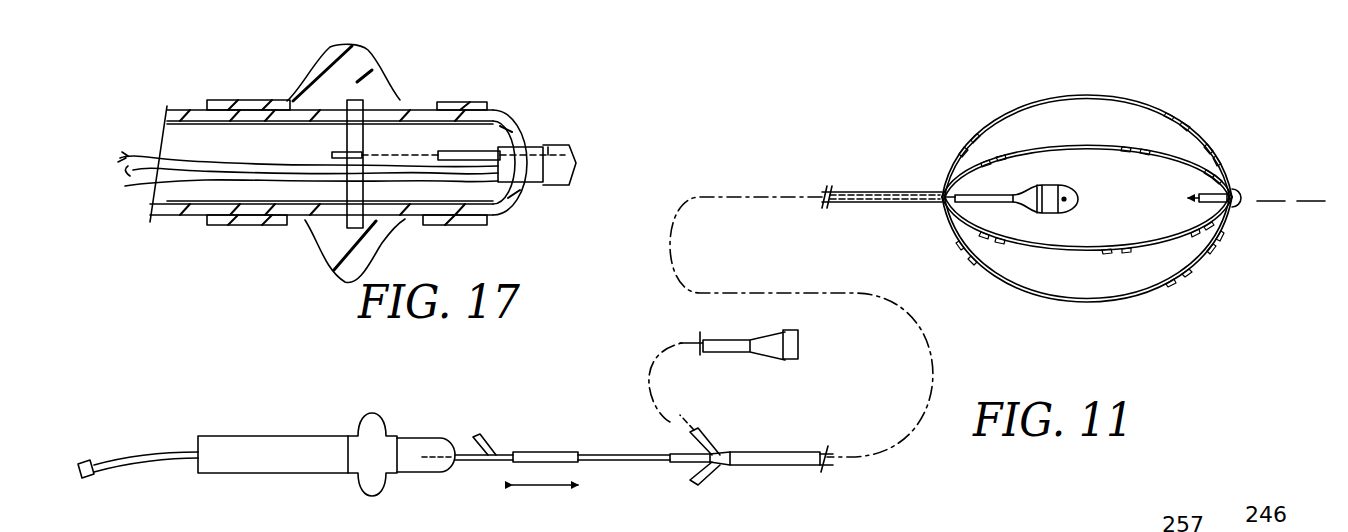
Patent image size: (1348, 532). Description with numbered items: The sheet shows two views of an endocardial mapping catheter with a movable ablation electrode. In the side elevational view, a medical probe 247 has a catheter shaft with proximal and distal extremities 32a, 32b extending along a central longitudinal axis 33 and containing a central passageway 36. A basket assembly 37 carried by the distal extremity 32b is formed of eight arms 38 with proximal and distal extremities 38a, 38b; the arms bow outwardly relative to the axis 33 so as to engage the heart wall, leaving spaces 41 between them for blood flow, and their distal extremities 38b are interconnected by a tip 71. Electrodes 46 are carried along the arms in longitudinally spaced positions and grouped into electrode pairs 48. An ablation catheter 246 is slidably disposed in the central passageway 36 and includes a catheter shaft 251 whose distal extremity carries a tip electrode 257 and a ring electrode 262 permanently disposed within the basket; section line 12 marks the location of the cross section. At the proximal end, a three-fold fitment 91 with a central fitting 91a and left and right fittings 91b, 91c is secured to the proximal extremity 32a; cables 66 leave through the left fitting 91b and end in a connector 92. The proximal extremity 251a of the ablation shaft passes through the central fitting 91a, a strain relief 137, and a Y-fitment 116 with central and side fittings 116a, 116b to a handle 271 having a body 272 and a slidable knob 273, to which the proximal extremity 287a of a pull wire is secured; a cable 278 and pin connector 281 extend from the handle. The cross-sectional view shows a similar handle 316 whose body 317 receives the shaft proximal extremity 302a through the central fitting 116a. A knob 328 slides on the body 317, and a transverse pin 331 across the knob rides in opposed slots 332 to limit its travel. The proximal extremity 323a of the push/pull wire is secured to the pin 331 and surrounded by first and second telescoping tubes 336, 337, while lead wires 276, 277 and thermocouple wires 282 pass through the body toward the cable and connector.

In FIG. 17, the handle 316 is at (482, 96).
In FIG. 17, the handle body 317 is at (192, 110).
In FIG. 17, the opposed slots 332 is at (290, 102).
In FIG. 17, the knob 328 is at (357, 66).
In FIG. 17, the pin 331 is at (346, 124).
In FIG. 17, the first telescoping tube 336 is at (402, 154).
In FIG. 17, the second telescoping tube 337 is at (478, 152).
In FIG. 17, the proximal extremity of catheter shaft 302a is at (538, 182).
In FIG. 17, the central fitting 116a is at (560, 146).
In FIG. 11, the central fitting 116a is at (483, 461).
In FIG. 17, the proximal extremity of push/pull wire 323a is at (540, 150).
In FIG. 17, the first wire 276 is at (134, 157).
In FIG. 17, the second wire 277 is at (135, 172).
In FIG. 17, the thermocouple wires 282 is at (131, 186).
In FIG. 11, the proximal extremity of catheter shaft 32a is at (792, 456).
In FIG. 11, the distal extremity of catheter shaft 32b is at (898, 192).
In FIG. 11, the central passageway 36 is at (862, 203).
In FIG. 11, the medical probe 247 is at (1200, 96).
In FIG. 11, the arms 38 is at (1088, 98).
In FIG. 11, the spaces 41 is at (1212, 150).
In FIG. 11, the basket assembly 37 is at (1196, 277).
In FIG. 11, the electrode pairs 48 is at (1132, 306).
In FIG. 11, the electrodes 46 is at (1130, 292).
In FIG. 11, the catheter shaft 251 is at (975, 193).
In FIG. 11, the proximal extremities of arms 38a is at (976, 202).
In FIG. 11, the tip electrode 257 is at (1080, 186).
In FIG. 11, the ring electrode 262 is at (1050, 212).
In FIG. 11, the ablation catheter 246 is at (1087, 210).
In FIG. 11, the distal extremities of arms 38b is at (1222, 202).
In FIG. 11, the tip 71 is at (1246, 207).
In FIG. 11, the central longitudinal axis 33 is at (1305, 201).
In FIG. 11, the section line 12 is at (992, 201).
In FIG. 11, the cables 66 is at (735, 340).
In FIG. 11, the connector 92 is at (780, 336).
In FIG. 11, the handle 271 is at (243, 425).
In FIG. 11, the pin connector 281 is at (88, 460).
In FIG. 11, the cable 278 is at (125, 463).
In FIG. 11, the handle body 272 is at (312, 473).
In FIG. 11, the knob 273 is at (370, 414).
In FIG. 11, the proximal extremity of pull wire 287a is at (430, 460).
In FIG. 11, the side fitting 116b is at (482, 432).
In FIG. 11, the Y-fitment 116 is at (500, 446).
In FIG. 11, the strain relief 137 is at (536, 453).
In FIG. 11, the proximal extremity of catheter shaft 251a is at (603, 461).
In FIG. 11, the central fitting 91a is at (673, 455).
In FIG. 11, the three-fold fitment 91 is at (728, 452).
In FIG. 11, the left fitting 91b is at (688, 432).
In FIG. 11, the right fitting 91c is at (697, 487).